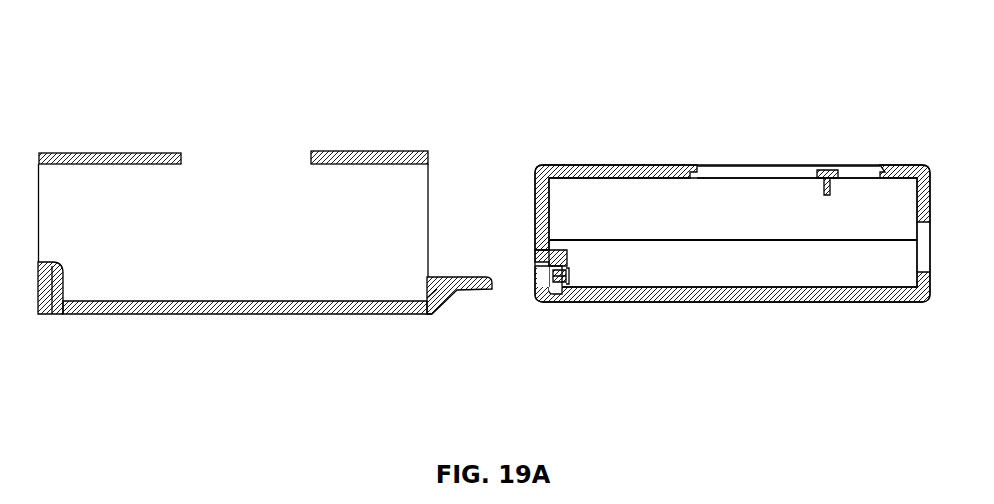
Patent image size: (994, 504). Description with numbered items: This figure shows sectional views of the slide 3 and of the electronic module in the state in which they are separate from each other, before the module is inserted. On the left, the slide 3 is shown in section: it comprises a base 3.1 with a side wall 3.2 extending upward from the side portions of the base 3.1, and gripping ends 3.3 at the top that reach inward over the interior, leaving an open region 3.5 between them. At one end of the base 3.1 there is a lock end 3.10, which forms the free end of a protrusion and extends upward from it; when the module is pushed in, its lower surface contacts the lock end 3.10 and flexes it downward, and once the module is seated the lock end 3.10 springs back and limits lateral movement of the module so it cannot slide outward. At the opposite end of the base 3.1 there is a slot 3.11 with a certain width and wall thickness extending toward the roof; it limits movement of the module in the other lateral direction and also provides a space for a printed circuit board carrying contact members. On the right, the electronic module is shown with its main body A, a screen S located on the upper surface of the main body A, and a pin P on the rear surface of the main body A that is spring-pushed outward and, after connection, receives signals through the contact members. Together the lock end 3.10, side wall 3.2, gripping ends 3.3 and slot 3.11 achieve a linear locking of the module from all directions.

The slide 3 is at (118, 112).
The opening 3.5 is at (258, 148).
The gripping end 3.3 is at (430, 155).
The side wall 3.2 is at (430, 203).
The base 3.1 is at (332, 314).
The slot 3.11 is at (72, 314).
The lock end 3.10 is at (482, 290).
The main body A is at (615, 168).
The screen S is at (742, 168).
The pin P is at (553, 275).